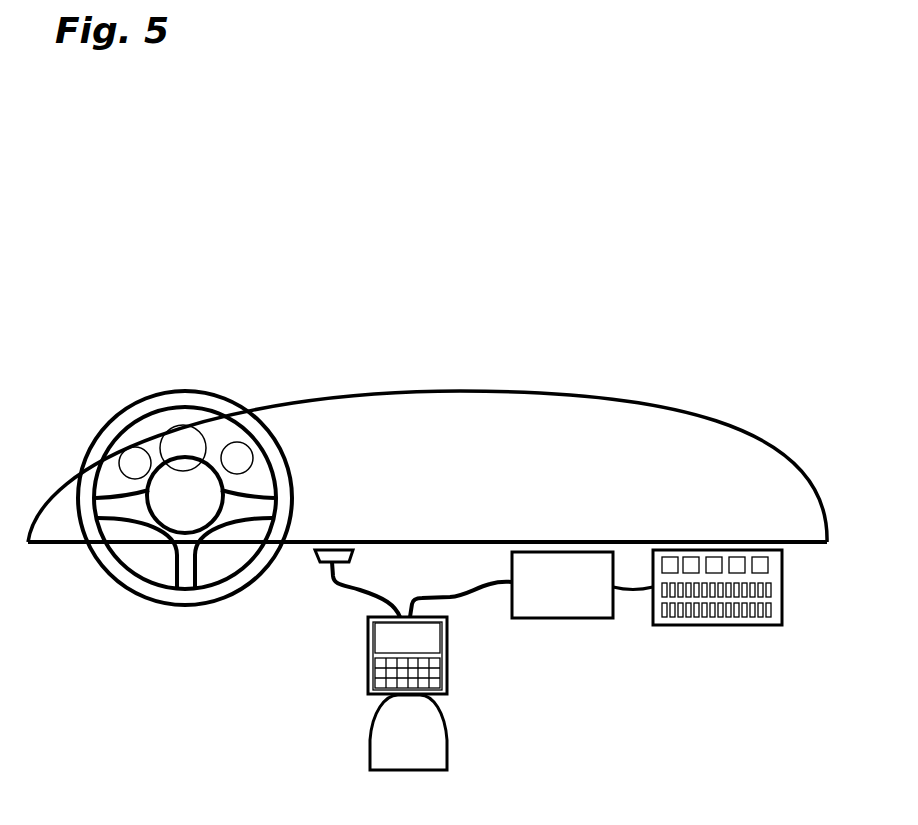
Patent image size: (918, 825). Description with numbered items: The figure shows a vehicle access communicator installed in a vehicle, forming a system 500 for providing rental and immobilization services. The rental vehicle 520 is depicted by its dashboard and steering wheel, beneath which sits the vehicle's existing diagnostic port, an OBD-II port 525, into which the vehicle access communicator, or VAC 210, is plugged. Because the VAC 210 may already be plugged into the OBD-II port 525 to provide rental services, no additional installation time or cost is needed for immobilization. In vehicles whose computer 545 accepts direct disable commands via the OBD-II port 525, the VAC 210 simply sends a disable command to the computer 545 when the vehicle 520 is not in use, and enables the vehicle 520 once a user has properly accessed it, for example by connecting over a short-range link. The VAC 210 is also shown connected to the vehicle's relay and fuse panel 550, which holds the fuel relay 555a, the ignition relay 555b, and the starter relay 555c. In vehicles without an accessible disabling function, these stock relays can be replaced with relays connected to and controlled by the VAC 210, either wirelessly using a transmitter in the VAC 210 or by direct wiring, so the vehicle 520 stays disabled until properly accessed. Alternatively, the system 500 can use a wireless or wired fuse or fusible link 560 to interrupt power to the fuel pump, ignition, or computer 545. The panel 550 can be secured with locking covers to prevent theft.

The system 500 is at (156, 228).
The rental vehicle 520 is at (340, 363).
The diagnostic port (OBD-II port) 525 is at (355, 552).
The vehicle access communicator (VAC) 210 is at (450, 657).
The vehicle computer 545 is at (547, 552).
The relay and/or fuse panel 550 is at (695, 627).
The fuel relay 555a is at (665, 555).
The ignition relay 555b is at (713, 555).
The starter relay 555c is at (738, 555).
The fuse or fusible link 560 is at (793, 596).